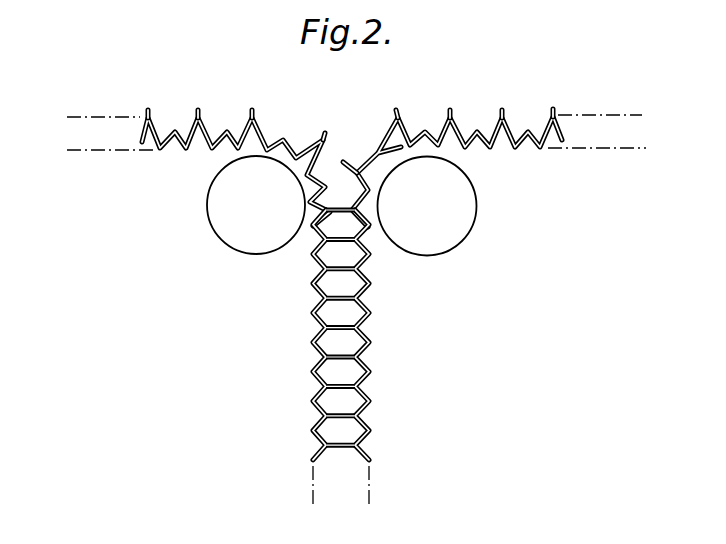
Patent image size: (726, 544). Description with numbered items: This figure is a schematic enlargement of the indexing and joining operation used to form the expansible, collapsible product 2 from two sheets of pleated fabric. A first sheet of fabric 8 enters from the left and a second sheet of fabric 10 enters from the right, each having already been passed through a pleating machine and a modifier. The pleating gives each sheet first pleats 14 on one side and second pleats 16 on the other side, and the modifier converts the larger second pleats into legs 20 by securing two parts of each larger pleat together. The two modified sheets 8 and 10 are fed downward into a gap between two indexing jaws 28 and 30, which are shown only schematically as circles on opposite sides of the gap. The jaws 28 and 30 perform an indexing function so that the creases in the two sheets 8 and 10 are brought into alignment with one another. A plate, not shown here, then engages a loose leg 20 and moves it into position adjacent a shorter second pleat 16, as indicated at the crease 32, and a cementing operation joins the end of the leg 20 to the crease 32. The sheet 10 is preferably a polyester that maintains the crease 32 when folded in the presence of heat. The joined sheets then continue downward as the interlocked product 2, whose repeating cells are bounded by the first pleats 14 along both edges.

The expansible, collapsible product 2 is at (372, 350).
The first sheet of fabric 8 is at (184, 149).
The second sheet of fabric 10 is at (517, 150).
The first pleats 14 is at (543, 153).
The second pleats 16 is at (516, 147).
The legs 20 is at (196, 117).
The indexing jaw 28 is at (455, 235).
The indexing jaw 30 is at (238, 243).
The crease 32 is at (350, 200).